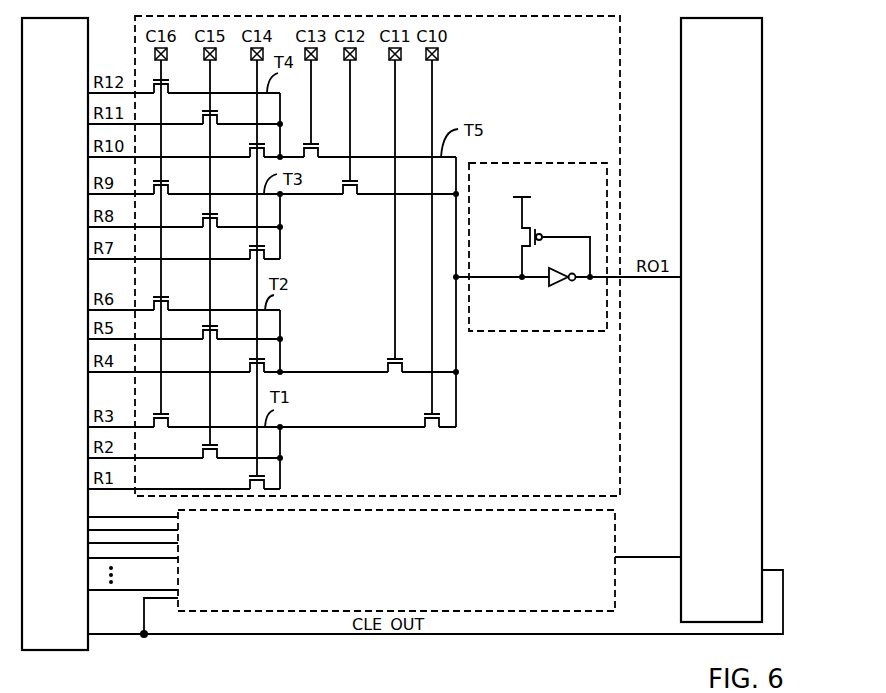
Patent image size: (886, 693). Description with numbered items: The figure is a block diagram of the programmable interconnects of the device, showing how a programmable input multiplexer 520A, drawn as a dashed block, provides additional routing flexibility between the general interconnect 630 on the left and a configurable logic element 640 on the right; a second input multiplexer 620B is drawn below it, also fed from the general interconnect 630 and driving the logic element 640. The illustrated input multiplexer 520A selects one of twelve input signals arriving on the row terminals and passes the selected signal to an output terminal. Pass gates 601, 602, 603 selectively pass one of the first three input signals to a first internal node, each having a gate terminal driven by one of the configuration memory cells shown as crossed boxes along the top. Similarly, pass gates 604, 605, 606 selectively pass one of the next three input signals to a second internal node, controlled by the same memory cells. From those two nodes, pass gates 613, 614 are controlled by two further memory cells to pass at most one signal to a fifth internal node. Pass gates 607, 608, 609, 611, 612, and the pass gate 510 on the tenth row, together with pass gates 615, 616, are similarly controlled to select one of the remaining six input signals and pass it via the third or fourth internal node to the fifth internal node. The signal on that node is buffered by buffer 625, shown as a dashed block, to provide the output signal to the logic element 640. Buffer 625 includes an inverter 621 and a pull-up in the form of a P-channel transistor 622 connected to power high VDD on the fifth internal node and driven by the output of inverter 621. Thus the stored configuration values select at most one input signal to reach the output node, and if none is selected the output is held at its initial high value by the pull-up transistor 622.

The general interconnect 630 is at (55, 334).
The logic element 640 is at (721, 320).
The input multiplexer 520A is at (377, 256).
The input multiplexer 620B is at (396, 560).
The buffer 625 is at (568, 228).
The P-channel transistor 622 is at (520, 237).
The inverter 621 is at (547, 284).
The pass gate 612 is at (168, 91).
The pass gate 611 is at (232, 112).
The pass transistor 510 is at (250, 155).
The pass gate 609 is at (168, 192).
The pass gate 608 is at (232, 213).
The pass gate 607 is at (250, 257).
The pass gate 606 is at (183, 297).
The pass gate 605 is at (232, 330).
The pass gate 604 is at (250, 370).
The pass gate 603 is at (168, 425).
The pass gate 602 is at (232, 447).
The pass gate 601 is at (250, 487).
The pass gate 616 is at (333, 142).
The pass gate 615 is at (373, 180).
The pass gate 614 is at (388, 370).
The pass gate 613 is at (425, 425).